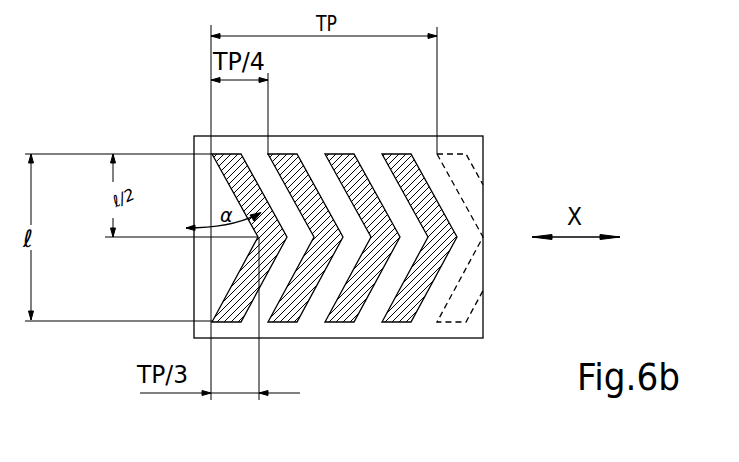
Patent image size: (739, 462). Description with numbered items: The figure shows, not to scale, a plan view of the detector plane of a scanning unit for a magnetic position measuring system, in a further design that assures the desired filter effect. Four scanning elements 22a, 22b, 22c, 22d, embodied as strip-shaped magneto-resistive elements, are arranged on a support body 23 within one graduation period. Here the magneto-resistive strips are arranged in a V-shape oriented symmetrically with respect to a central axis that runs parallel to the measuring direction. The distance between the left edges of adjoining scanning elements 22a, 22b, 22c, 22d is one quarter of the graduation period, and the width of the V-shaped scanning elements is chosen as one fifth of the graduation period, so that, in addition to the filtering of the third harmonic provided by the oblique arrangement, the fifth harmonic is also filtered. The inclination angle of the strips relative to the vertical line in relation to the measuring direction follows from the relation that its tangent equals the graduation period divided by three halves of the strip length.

The scanning element 22a is at (232, 300).
The scanning element 22b is at (297, 320).
The scanning element 22c is at (353, 318).
The scanning element 22d is at (408, 318).
The support body 23 is at (463, 332).